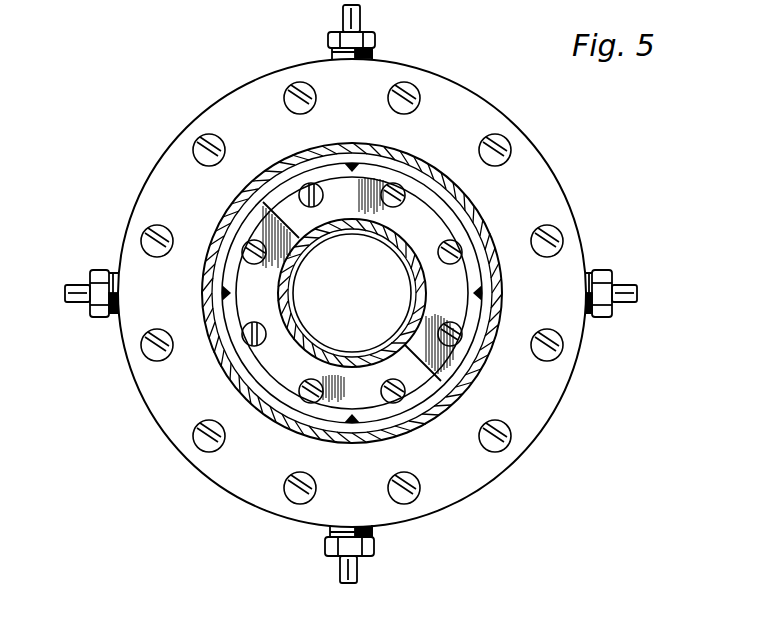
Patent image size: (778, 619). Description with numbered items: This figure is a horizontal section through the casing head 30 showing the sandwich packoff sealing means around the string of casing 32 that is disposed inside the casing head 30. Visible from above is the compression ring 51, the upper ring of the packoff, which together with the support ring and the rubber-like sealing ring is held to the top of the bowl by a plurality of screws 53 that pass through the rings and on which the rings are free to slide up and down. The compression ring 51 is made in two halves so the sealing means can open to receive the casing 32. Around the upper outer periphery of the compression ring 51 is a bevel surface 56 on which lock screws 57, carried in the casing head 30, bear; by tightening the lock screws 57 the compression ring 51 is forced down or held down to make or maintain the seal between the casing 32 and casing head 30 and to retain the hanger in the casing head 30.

The casing head 30 is at (560, 399).
The lock screws 57 is at (232, 292).
The bevel surface 56 is at (430, 387).
The screws 53 is at (385, 206).
The casing 32 is at (418, 300).
The compression ring 51 is at (347, 374).